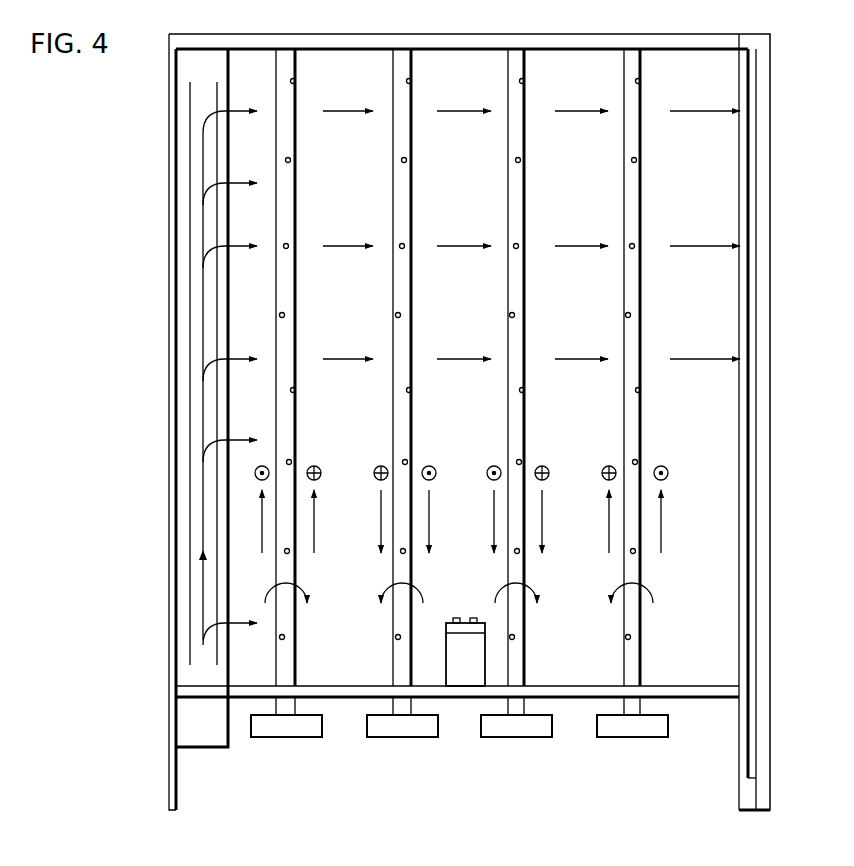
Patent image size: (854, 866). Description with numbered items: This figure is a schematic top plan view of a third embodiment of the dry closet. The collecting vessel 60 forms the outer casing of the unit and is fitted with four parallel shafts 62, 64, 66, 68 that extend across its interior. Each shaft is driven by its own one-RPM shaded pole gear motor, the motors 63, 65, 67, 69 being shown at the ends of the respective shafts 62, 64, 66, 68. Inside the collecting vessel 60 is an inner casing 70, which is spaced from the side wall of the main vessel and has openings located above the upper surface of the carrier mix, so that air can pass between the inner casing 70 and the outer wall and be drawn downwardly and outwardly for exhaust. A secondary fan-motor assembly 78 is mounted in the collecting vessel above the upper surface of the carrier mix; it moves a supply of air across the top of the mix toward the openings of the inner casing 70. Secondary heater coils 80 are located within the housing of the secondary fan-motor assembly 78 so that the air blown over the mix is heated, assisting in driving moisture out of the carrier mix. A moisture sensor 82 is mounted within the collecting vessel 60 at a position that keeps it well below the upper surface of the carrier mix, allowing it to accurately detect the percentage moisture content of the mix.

The collecting vessel 60 is at (375, 35).
The shaft 62 is at (297, 177).
The shaded pole gear motor 63 is at (303, 733).
The shaft 64 is at (409, 177).
The shaded pole gear motor 65 is at (404, 733).
The shaft 66 is at (532, 177).
The shaded pole gear motor 67 is at (520, 733).
The shaft 68 is at (644, 177).
The shaded pole gear motor 69 is at (640, 733).
The inner casing 70 is at (738, 333).
The secondary fan-motor assembly 78 is at (207, 737).
The secondary heater coils 80 is at (217, 295).
The moisture sensor 82 is at (463, 652).